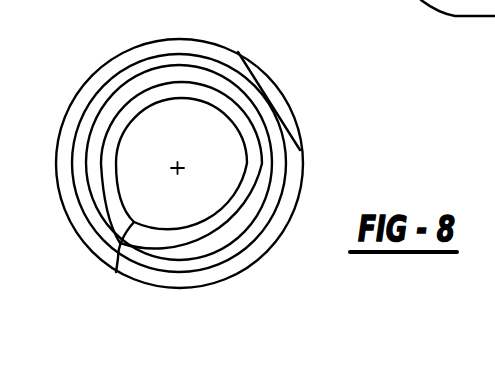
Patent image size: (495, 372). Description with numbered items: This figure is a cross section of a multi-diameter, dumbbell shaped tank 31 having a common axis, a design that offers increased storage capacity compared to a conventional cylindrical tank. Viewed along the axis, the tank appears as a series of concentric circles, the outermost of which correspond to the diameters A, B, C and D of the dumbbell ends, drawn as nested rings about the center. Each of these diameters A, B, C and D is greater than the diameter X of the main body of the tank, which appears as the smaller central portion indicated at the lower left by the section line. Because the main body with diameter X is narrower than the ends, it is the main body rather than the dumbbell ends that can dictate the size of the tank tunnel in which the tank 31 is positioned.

The diameter D is at (238, 52).
The diameter C is at (258, 83).
The diameter B is at (287, 97).
The multi-diameter tank 31 is at (297, 137).
The diameter A is at (264, 180).
The diameter X is at (116, 272).